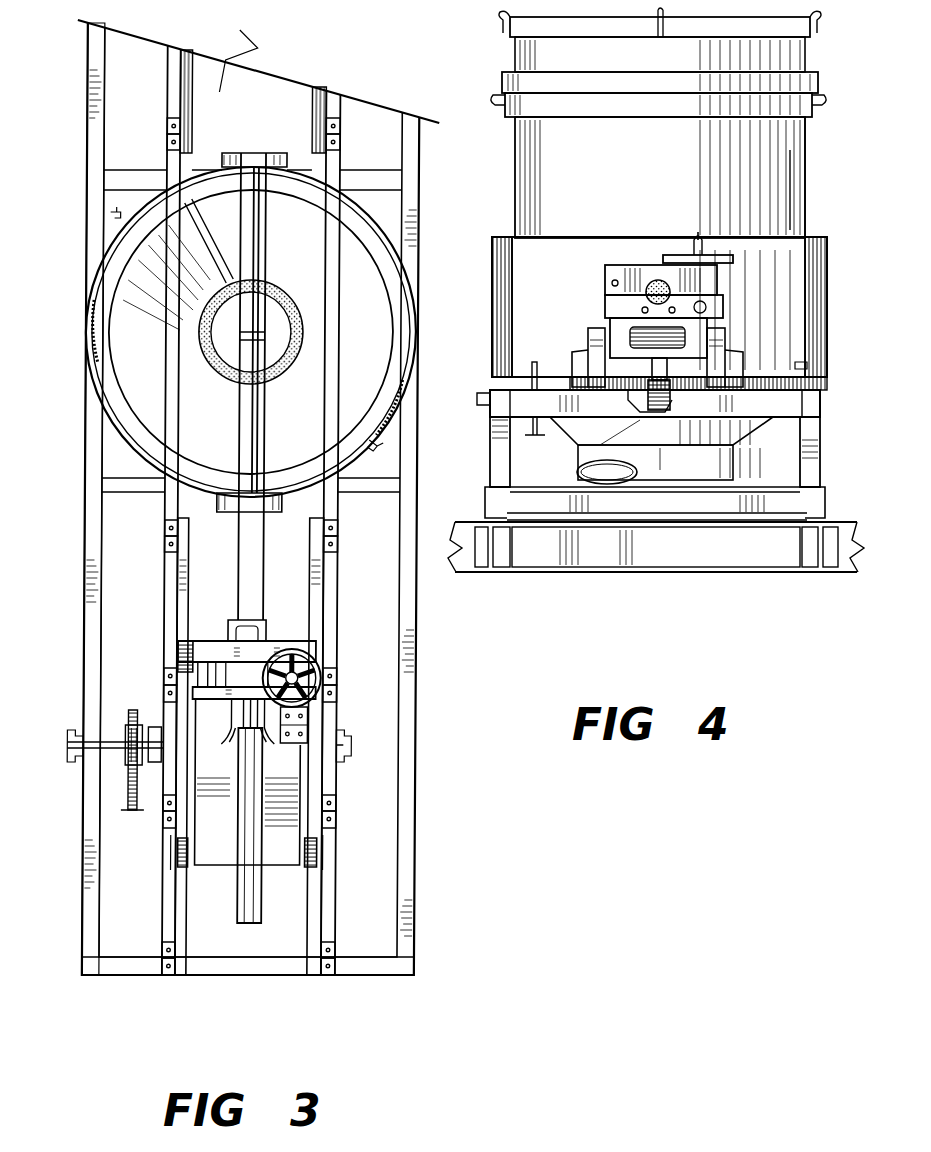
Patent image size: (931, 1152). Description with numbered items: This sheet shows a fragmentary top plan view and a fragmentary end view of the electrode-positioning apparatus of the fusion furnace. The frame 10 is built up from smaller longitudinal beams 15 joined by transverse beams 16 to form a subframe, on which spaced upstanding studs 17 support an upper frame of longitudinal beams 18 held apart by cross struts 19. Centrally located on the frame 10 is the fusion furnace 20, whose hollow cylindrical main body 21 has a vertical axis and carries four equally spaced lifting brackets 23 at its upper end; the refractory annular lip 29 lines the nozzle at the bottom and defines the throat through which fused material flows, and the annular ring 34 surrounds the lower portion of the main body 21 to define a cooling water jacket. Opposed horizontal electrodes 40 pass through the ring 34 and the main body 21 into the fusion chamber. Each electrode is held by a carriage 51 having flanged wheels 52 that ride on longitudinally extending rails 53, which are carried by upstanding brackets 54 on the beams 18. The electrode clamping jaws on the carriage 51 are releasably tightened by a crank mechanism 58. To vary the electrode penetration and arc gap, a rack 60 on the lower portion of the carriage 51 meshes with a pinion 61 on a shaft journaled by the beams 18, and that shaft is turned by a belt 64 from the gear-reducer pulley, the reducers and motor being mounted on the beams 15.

In FIG. 3, the frame 10 is at (82, 498).
In FIG. 4, the frame 10 is at (828, 282).
In FIG. 4, the smaller longitudinal beams 15 is at (490, 506).
In FIG. 4, the transverse beams 16 is at (700, 508).
In FIG. 4, the upstanding studs 17 is at (495, 436).
In FIG. 3, the longitudinal beams 18 is at (86, 583).
In FIG. 4, the longitudinal beams 18 is at (505, 386).
In FIG. 3, the cross struts 19 is at (258, 968).
In FIG. 4, the cross struts 19 is at (785, 409).
In FIG. 3, the fusion furnace 20 is at (373, 254).
In FIG. 4, the fusion furnace 20 is at (806, 166).
In FIG. 4, the main body 21 is at (790, 206).
In FIG. 4, the lifting brackets 23 is at (818, 93).
In FIG. 3, the annular lip 29 is at (295, 354).
In FIG. 3, the annular ring 34 is at (413, 298).
In FIG. 4, the annular ring 34 is at (810, 326).
In FIG. 3, the electrodes 40 is at (241, 888).
In FIG. 4, the electrodes 40 is at (652, 283).
In FIG. 3, the carriage 51 is at (219, 640).
In FIG. 4, the carriage 51 is at (605, 272).
In FIG. 3, the flanged wheels 52 is at (181, 656).
In FIG. 3, the rails 53 is at (184, 576).
In FIG. 3, the upstanding brackets 54 is at (167, 530).
In FIG. 3, the crank mechanism 58 is at (295, 647).
In FIG. 4, the crank mechanism 58 is at (685, 255).
In FIG. 4, the rack 60 is at (666, 381).
In FIG. 4, the pinion 61 is at (672, 401).
In FIG. 3, the belt 64 is at (140, 712).
In FIG. 4, the belt 64 is at (540, 366).